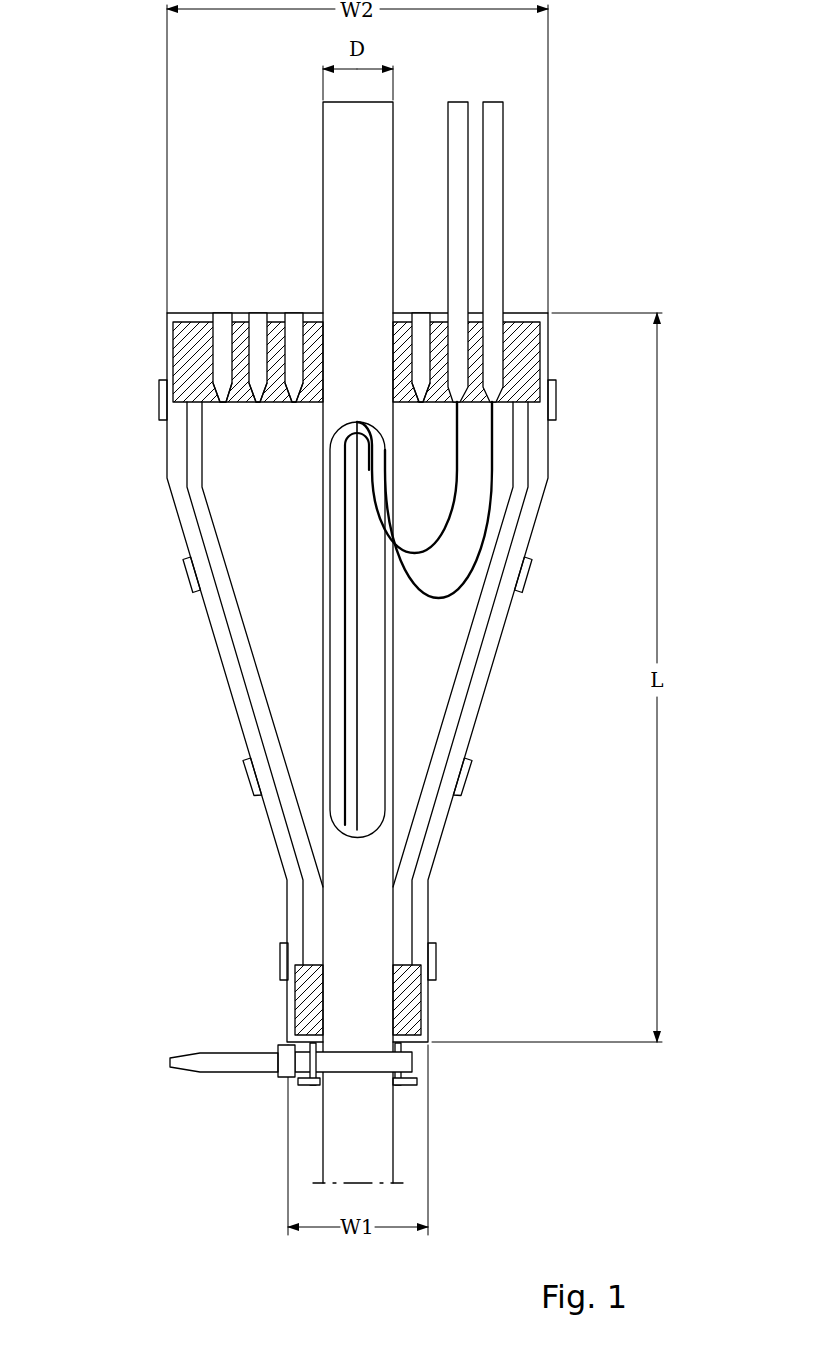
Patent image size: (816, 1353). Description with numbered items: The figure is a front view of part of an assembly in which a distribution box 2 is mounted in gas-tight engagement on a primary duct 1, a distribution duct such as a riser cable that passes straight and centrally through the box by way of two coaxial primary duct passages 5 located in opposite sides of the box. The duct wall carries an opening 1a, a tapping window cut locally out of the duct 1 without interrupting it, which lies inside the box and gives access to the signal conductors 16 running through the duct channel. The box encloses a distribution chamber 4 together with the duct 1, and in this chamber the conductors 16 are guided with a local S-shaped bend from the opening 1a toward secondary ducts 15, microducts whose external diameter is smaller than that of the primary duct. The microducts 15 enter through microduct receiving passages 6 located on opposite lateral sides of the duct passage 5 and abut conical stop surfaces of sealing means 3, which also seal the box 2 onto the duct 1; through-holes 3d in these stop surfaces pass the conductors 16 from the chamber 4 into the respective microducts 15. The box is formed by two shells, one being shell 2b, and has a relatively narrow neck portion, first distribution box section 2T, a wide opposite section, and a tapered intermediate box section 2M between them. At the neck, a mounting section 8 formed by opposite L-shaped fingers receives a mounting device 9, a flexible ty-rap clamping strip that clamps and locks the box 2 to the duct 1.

The primary duct 1 is at (357, 159).
The opening 1a is at (387, 692).
The distribution box 2 is at (330, 689).
The shell 2b is at (164, 460).
The intermediate box section 2M is at (202, 617).
The first distribution box section 2T is at (285, 1000).
The sealing means 3 is at (263, 712).
The through-holes 3d is at (285, 405).
The distribution chamber 4 is at (296, 617).
The primary duct passages 5 is at (320, 308).
The microduct receiving passages 6 is at (256, 305).
The mounting section 8 is at (309, 1090).
The mounting device 9 is at (228, 1078).
The secondary ducts 15 is at (511, 157).
The signal conductors 16 is at (490, 517).